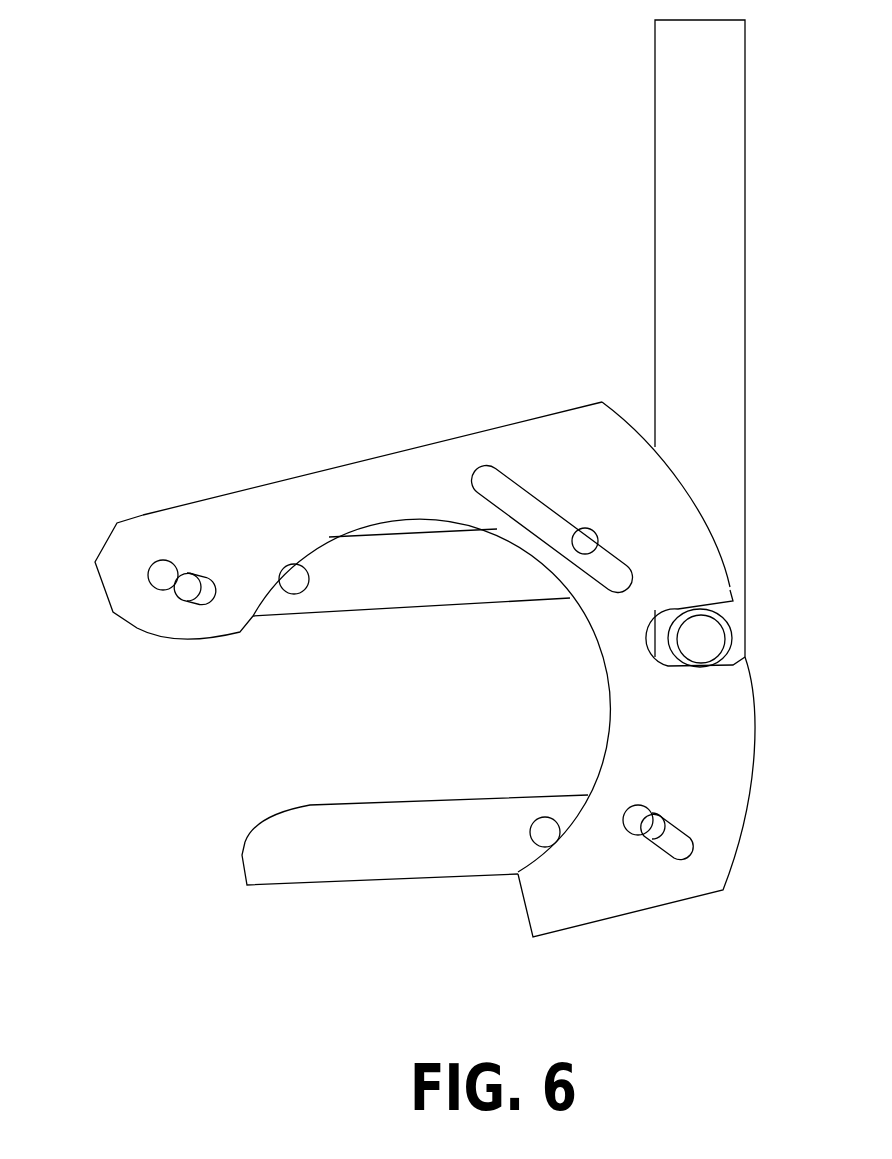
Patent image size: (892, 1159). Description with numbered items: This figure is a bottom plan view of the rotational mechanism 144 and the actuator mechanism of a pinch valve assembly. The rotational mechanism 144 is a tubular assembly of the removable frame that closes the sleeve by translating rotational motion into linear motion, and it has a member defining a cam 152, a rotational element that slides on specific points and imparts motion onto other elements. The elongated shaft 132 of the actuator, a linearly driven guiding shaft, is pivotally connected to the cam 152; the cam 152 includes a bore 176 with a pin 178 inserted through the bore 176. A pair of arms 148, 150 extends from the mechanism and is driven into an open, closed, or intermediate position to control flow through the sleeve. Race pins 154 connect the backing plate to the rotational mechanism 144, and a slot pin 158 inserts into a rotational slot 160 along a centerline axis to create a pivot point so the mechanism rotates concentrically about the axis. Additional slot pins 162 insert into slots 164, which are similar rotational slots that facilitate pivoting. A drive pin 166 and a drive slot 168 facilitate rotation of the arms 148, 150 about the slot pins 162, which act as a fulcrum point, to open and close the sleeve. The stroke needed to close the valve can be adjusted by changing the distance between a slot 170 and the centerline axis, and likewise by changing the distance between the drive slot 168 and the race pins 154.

The elongated shaft 132 is at (692, 143).
The rotational mechanism 144 is at (338, 357).
The arm 148 is at (350, 583).
The arm 150 is at (332, 845).
The cam 152 is at (237, 510).
The race pins 154 is at (285, 582).
The slot pin 158 is at (585, 540).
The rotational slot 160 is at (528, 490).
The slot pins 162 is at (652, 820).
The slots 164 is at (682, 832).
The drive pin 166 is at (182, 596).
The drive slot 168 is at (173, 577).
The slot 170 is at (745, 657).
The bore 176 is at (708, 640).
The pin 178 is at (723, 625).